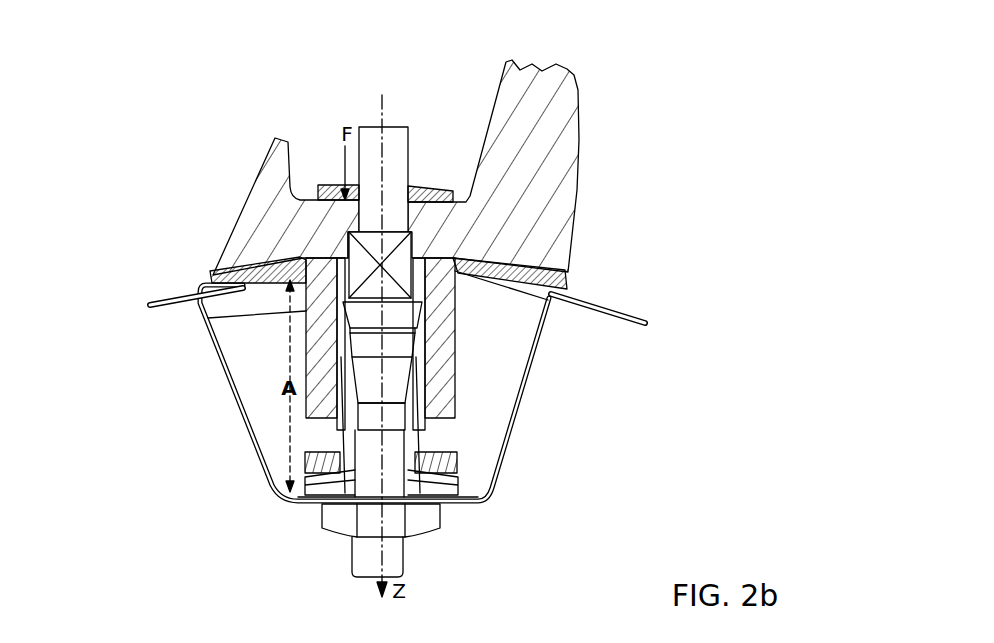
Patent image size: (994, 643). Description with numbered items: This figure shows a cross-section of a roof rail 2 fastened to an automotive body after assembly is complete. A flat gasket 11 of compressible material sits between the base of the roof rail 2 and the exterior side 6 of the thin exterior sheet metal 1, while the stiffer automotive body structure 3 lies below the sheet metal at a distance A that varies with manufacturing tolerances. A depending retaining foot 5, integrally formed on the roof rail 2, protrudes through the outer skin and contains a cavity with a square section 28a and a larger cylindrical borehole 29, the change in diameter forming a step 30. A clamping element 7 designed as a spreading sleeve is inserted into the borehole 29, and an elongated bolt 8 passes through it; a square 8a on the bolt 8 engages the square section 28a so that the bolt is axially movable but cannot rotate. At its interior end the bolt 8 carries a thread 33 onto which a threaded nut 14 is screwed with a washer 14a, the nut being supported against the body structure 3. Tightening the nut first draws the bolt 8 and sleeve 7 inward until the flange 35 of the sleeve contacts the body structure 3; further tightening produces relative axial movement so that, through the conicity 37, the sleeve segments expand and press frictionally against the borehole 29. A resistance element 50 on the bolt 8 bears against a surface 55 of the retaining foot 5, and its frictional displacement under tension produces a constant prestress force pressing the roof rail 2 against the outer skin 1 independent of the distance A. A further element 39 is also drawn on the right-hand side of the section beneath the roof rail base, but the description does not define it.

The exterior sheet metal 1 is at (185, 292).
The roof rail 2 is at (583, 125).
The automotive body structure 3 is at (250, 443).
The retaining foot 5 is at (433, 273).
The exterior side 6 is at (592, 292).
The clamping element 7 is at (413, 420).
The bolt 8 is at (410, 163).
The square 8a is at (410, 232).
The flat gasket 11 is at (232, 270).
The threaded nut 14 is at (330, 523).
The washer 14a is at (317, 505).
The square section 28a is at (345, 222).
The borehole 29 is at (432, 385).
The step 30 is at (208, 316).
The thread 33 is at (410, 553).
The flange 35 is at (465, 502).
The conicity 37 is at (405, 395).
The plate 39 is at (543, 297).
The resistance element 50 is at (332, 182).
The surface 55 is at (311, 197).